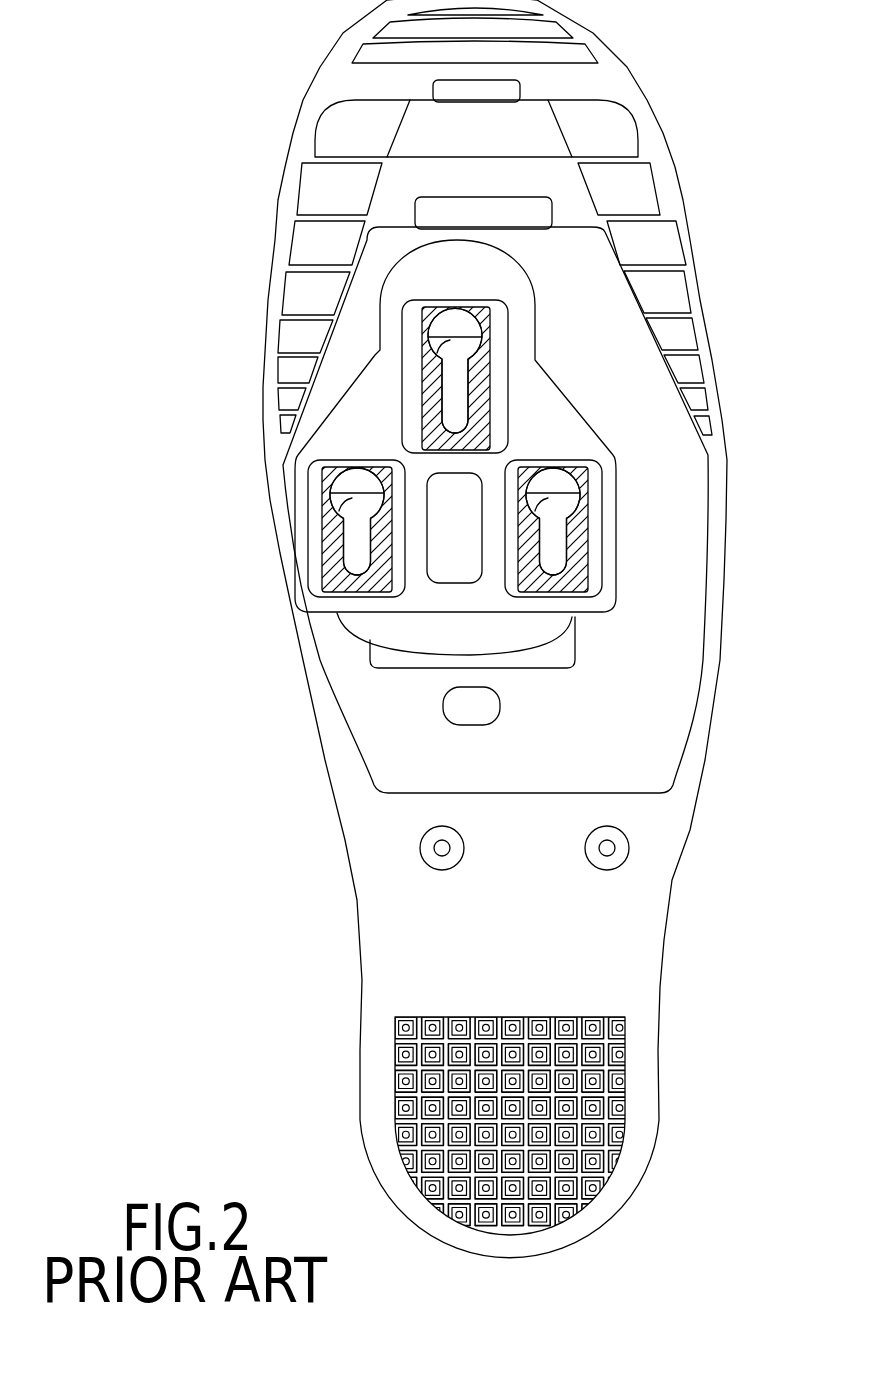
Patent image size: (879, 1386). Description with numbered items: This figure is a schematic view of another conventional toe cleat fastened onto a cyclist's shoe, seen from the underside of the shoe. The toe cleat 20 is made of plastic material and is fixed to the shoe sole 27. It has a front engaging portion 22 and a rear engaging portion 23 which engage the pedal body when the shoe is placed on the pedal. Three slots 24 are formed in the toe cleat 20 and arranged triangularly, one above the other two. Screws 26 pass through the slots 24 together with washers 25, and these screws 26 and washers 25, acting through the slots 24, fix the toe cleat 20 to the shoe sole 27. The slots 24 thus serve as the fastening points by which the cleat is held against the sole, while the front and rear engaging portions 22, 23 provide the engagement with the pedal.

The toe cleat 20 is at (574, 402).
The front engaging portion 22 is at (412, 268).
The rear engaging portion 23 is at (397, 637).
The slots 24 is at (407, 333).
The washers 25 is at (420, 423).
The screws 26 is at (420, 361).
The shoe sole 27 is at (667, 440).